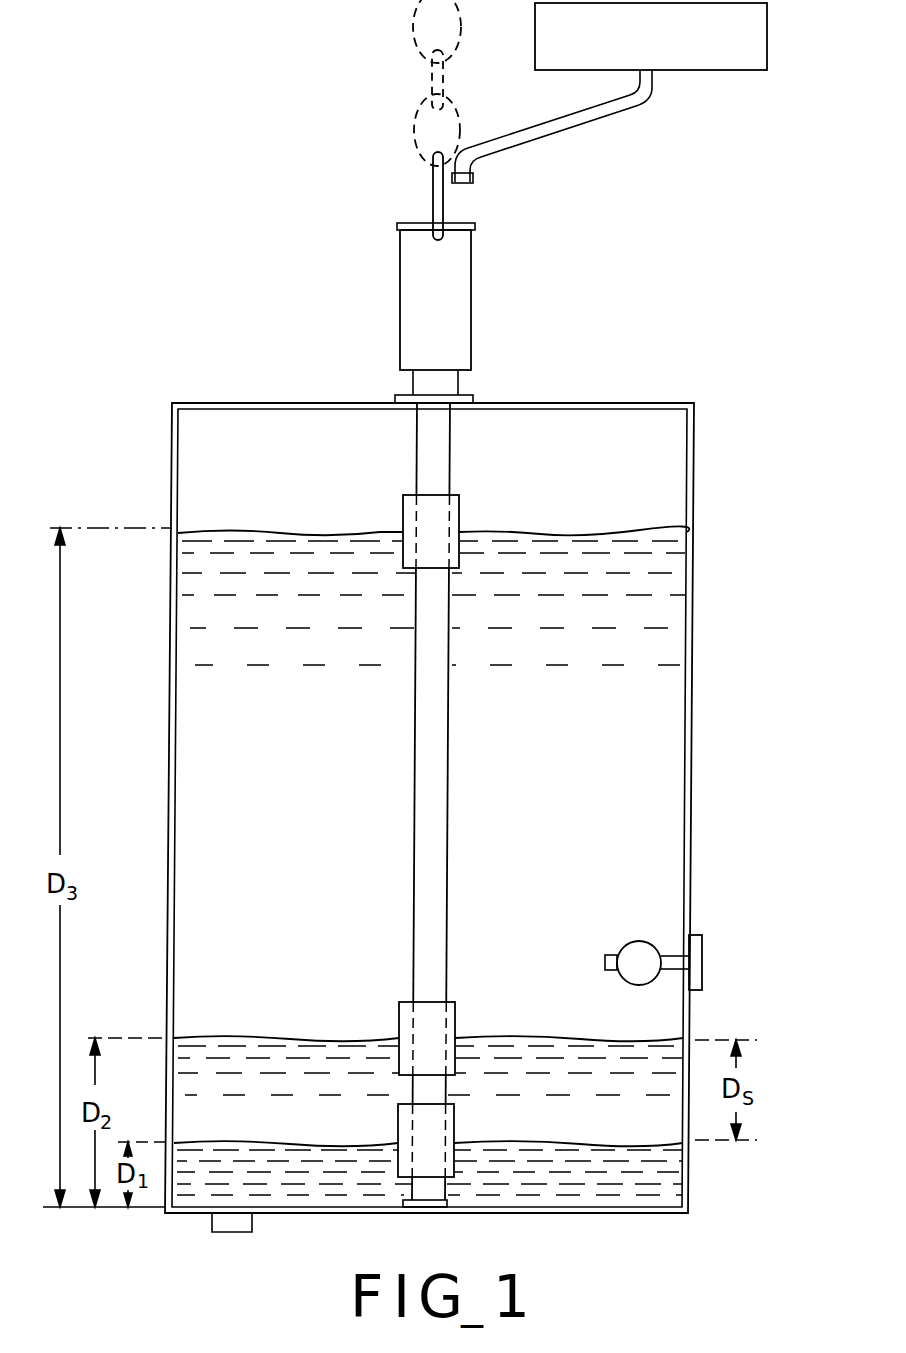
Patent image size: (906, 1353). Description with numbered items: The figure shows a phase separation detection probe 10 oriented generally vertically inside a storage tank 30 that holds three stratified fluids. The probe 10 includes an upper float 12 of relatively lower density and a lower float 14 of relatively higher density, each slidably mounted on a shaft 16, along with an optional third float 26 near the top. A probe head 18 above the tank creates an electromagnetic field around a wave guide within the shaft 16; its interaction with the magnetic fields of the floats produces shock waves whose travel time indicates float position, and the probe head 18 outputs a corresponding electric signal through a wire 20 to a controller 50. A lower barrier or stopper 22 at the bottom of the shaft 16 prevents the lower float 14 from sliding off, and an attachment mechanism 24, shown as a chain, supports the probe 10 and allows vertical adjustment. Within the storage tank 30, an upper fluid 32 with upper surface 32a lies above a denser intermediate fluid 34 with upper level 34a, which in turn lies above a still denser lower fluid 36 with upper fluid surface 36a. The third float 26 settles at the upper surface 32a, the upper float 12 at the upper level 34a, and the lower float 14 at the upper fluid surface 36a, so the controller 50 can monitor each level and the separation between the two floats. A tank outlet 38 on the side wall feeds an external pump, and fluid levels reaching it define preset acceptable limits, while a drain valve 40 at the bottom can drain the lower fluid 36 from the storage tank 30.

The phase separation detection probe 10 is at (472, 832).
The upper float 12 is at (452, 1015).
The lower float 14 is at (453, 1130).
The shaft 16 is at (446, 822).
The probe head 18 is at (472, 305).
The wire 20 is at (560, 130).
The lower barrier or stopper 22 is at (432, 1208).
The attachment mechanism 24 is at (406, 156).
The third float 26 is at (458, 518).
The storage tank 30 is at (233, 402).
The upper fluid 32 is at (650, 648).
The upper level or surface 32a is at (657, 532).
The intermediate fluid 34 is at (195, 1085).
The upper level 34a is at (225, 1038).
The lower fluid 36 is at (628, 1188).
The upper fluid surface 36a is at (658, 1145).
The tank outlet 38 is at (702, 945).
The drain valve 40 is at (222, 1232).
The controller 50 is at (731, 70).